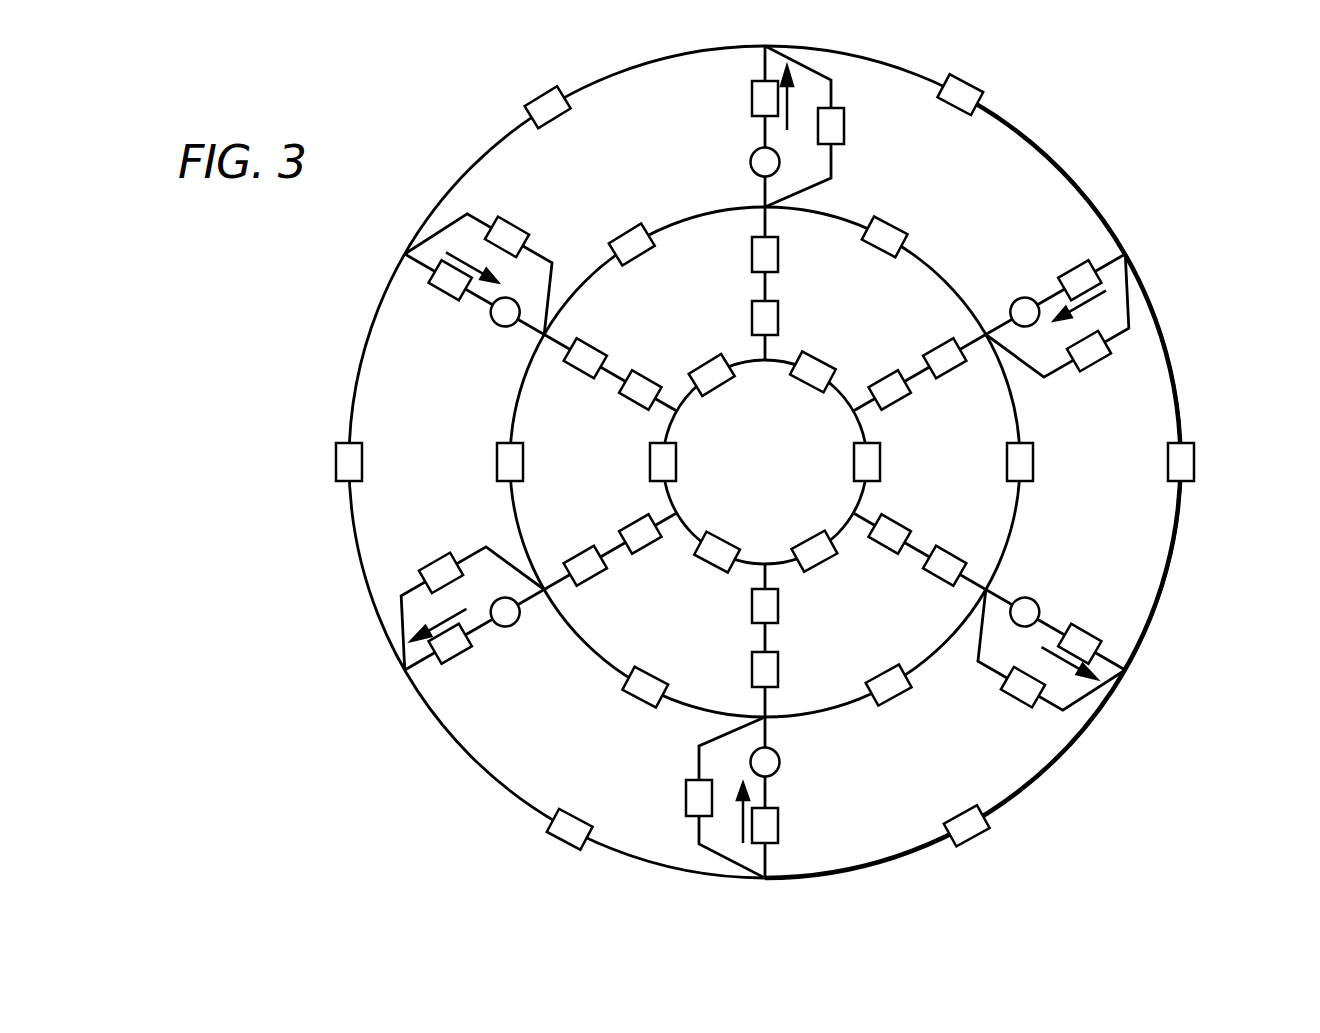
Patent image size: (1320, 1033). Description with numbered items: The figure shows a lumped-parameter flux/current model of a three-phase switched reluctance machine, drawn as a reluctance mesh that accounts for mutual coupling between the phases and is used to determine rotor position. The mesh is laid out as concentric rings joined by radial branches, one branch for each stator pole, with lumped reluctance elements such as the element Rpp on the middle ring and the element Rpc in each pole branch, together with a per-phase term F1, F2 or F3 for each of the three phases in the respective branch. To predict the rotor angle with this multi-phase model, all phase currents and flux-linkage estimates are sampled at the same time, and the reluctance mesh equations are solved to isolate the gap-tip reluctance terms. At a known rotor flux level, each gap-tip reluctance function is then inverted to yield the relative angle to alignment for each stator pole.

The pole-to-pole reluctance Rpp is at (762, 464).
The pole leakage (parallel) reluctance Rpc is at (763, 462).
The magnetomotive force source of phase 1 F1 is at (762, 455).
The magnetomotive force source of phase 2 F2 is at (764, 465).
The magnetomotive force source of phase 3 F3 is at (769, 462).